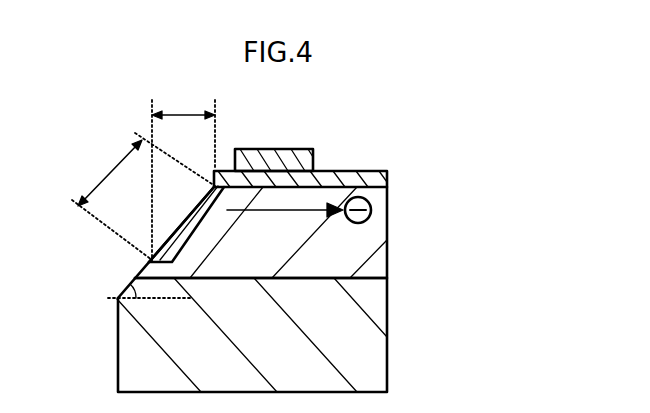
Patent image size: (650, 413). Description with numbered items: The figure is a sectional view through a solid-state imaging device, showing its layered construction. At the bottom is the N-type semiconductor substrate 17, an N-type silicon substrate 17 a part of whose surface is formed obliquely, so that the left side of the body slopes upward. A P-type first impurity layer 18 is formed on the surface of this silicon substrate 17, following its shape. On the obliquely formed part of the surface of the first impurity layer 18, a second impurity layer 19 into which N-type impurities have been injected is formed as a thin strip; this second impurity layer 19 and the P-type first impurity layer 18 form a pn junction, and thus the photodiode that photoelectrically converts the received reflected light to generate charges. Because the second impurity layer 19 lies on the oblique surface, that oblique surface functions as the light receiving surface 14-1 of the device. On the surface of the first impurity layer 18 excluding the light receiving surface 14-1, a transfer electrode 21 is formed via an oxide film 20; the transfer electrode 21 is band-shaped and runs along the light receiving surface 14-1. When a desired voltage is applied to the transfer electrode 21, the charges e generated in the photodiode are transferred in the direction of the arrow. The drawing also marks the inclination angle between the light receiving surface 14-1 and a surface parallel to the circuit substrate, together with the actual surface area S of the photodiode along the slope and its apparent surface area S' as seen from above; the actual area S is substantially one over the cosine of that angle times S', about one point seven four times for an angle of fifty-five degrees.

The N-type semiconductor substrate 17 is at (370, 343).
The first impurity layer 18 is at (373, 256).
The second impurity layer 19 is at (202, 207).
The oxide film 20 is at (387, 182).
The transfer electrode 21 is at (300, 148).
The light receiving surface 14-1 is at (136, 272).
The charges e is at (371, 210).
The actual surface area of the photodiode S is at (143, 196).
The apparent surface area of the photodiode S' is at (183, 176).